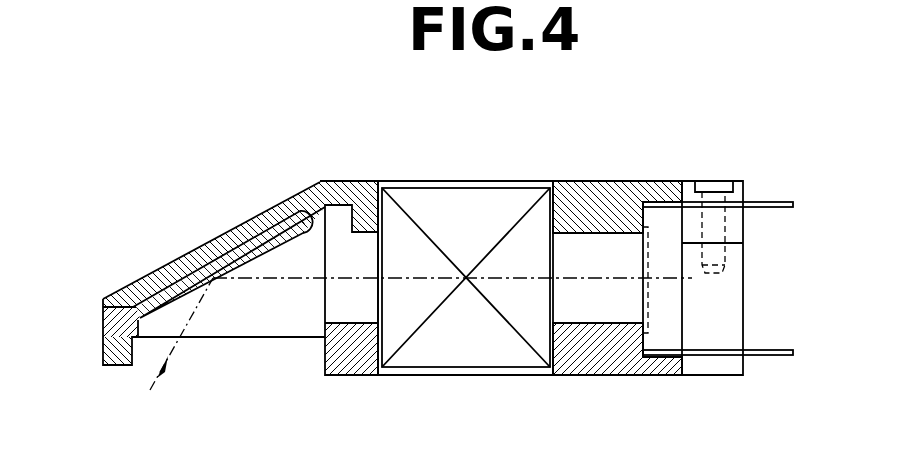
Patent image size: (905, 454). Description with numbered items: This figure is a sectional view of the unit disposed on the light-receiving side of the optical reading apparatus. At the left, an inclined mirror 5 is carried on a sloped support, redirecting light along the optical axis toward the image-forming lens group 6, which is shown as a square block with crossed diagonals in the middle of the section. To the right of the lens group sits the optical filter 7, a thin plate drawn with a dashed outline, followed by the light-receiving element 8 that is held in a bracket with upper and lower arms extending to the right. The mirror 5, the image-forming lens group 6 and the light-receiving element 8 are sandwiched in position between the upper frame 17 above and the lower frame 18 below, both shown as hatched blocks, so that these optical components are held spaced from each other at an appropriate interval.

The mirror 5 is at (258, 242).
The image-forming lens group 6 is at (475, 355).
The optical filter 7 is at (655, 320).
The light-receiving element 8 is at (680, 330).
The upper frame 17 is at (612, 189).
The lower frame 18 is at (590, 360).